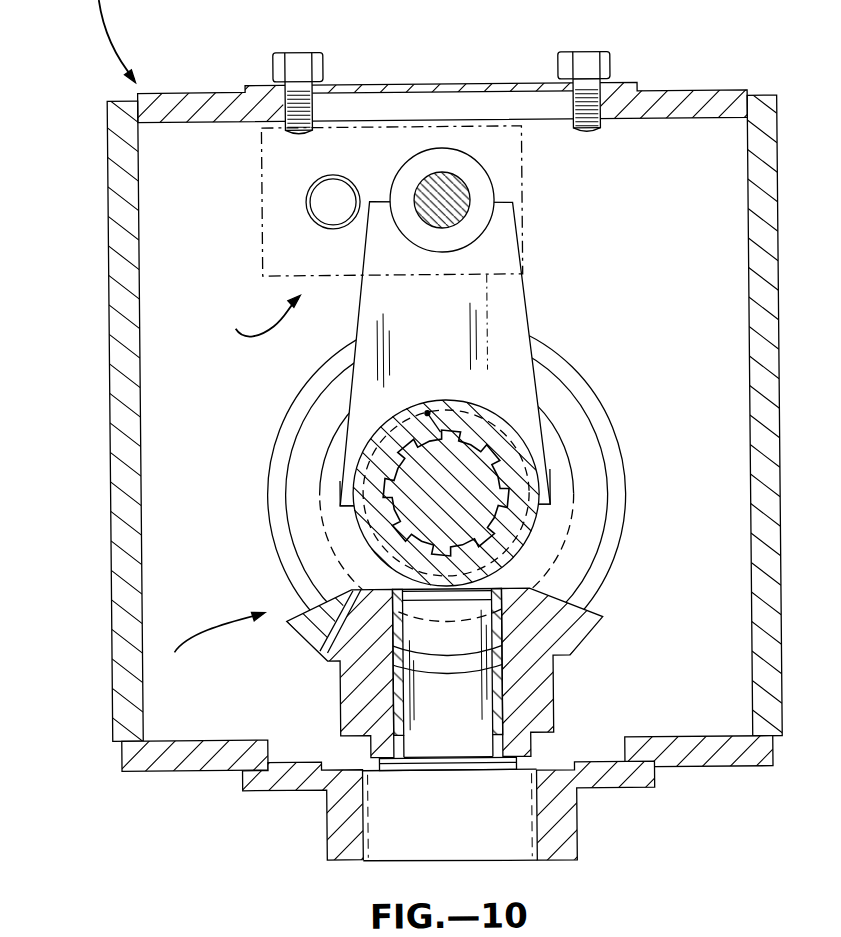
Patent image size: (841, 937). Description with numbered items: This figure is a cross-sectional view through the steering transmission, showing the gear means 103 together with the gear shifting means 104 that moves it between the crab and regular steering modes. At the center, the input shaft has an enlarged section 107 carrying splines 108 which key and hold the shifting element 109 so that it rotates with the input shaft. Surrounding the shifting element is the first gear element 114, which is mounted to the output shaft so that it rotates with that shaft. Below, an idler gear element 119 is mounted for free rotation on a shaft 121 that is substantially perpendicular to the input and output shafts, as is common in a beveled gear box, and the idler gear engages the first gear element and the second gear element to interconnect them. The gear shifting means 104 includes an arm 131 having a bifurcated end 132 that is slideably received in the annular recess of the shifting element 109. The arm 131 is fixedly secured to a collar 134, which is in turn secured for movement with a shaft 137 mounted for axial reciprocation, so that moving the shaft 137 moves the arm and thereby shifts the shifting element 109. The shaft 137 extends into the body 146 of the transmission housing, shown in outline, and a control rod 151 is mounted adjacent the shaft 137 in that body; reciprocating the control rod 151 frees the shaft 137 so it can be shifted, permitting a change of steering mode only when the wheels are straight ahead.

The gear means 103 is at (447, 762).
The gear shifting means 104 is at (247, 316).
The enlarged section 107 is at (459, 434).
The splines 108 is at (428, 413).
The shifting element 109 is at (533, 458).
The first gear element 114 is at (624, 506).
The idler gear element 119 is at (553, 688).
The shaft 121 is at (492, 708).
The arm 131 is at (460, 292).
The bifurcated end 132 is at (550, 470).
The collar 134 is at (495, 186).
The shaft 137 is at (450, 173).
The body 146 is at (525, 203).
The control rod 151 is at (308, 202).